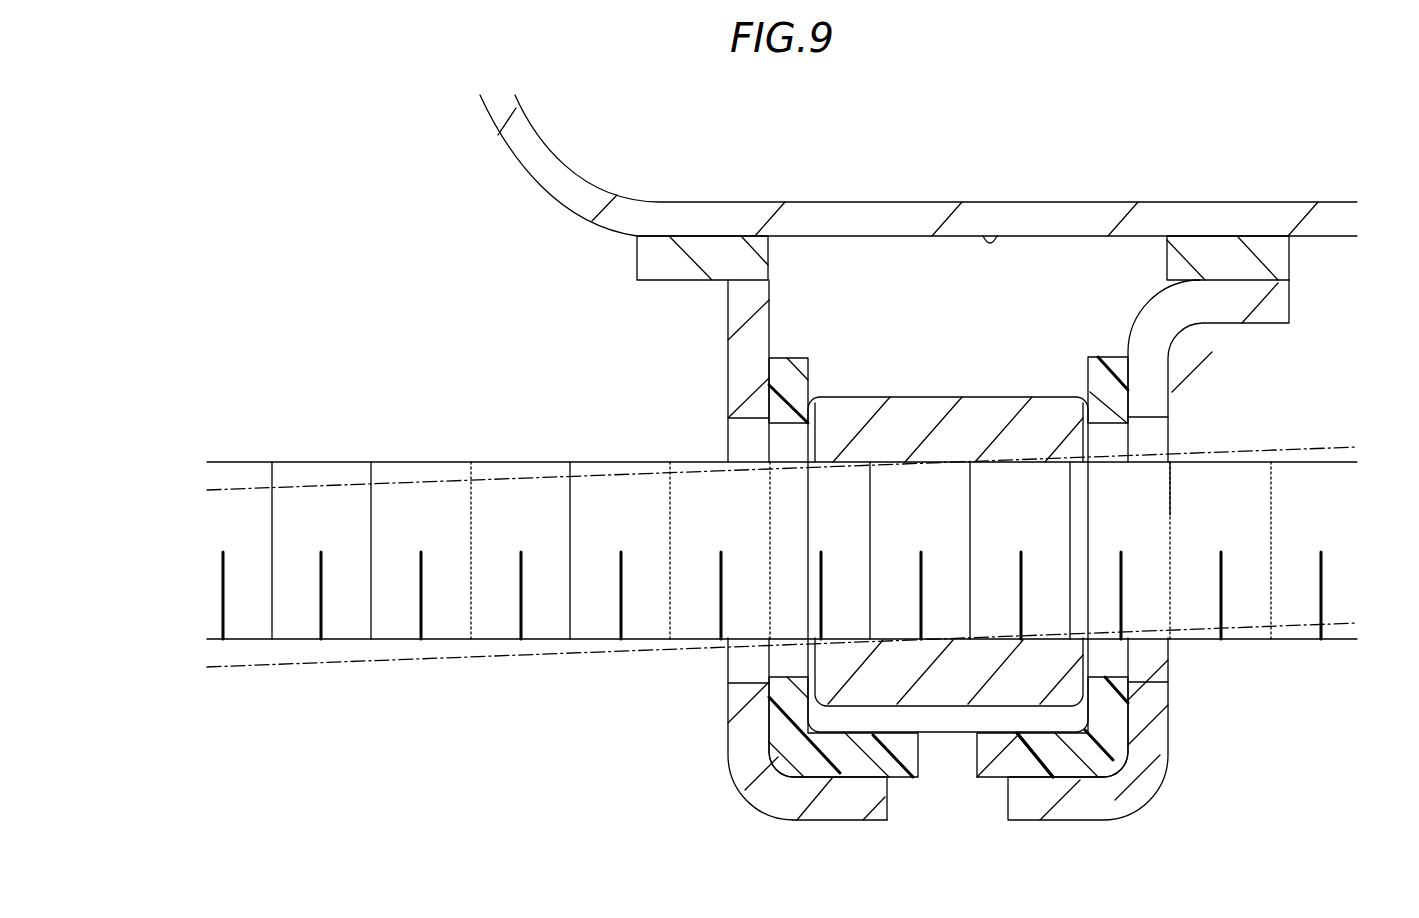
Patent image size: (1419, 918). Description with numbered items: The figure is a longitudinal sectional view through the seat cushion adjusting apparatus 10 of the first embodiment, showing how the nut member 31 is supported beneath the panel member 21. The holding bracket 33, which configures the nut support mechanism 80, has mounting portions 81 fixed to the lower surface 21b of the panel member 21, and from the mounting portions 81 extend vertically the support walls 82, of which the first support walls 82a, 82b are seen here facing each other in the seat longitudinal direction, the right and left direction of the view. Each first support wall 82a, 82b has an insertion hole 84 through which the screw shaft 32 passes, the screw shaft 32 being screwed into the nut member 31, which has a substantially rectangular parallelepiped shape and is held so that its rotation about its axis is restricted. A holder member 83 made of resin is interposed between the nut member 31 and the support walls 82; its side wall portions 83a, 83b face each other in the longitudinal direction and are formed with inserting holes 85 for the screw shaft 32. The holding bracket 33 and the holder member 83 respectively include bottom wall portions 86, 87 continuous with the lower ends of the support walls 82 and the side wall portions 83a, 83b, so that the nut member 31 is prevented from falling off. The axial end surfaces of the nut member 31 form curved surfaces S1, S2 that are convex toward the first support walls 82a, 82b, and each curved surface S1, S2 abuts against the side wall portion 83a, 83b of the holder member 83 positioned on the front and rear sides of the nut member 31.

The seat cushion adjusting apparatus 10 is at (287, 120).
The panel member 21 is at (533, 184).
The lower surface 21b is at (993, 236).
The nut member 31 is at (937, 397).
The screw shaft 32 is at (315, 462).
The holding bracket 33 is at (887, 820).
The nut support mechanism 80 is at (670, 778).
The mounting portion 81 is at (712, 243).
The support wall 82 is at (957, 550).
The first support wall 82a is at (737, 360).
The first support wall 82b is at (1160, 704).
The holder member 83 is at (978, 780).
The side wall portion 83a is at (795, 358).
The side wall portion 83b is at (1113, 363).
The insertion hole 84 is at (1150, 420).
The inserting hole 85 is at (783, 433).
The bottom wall portion 86 is at (825, 820).
The bottom wall portion 87 is at (1030, 770).
The curved surface S1 is at (812, 405).
The curved surface S2 is at (1082, 405).